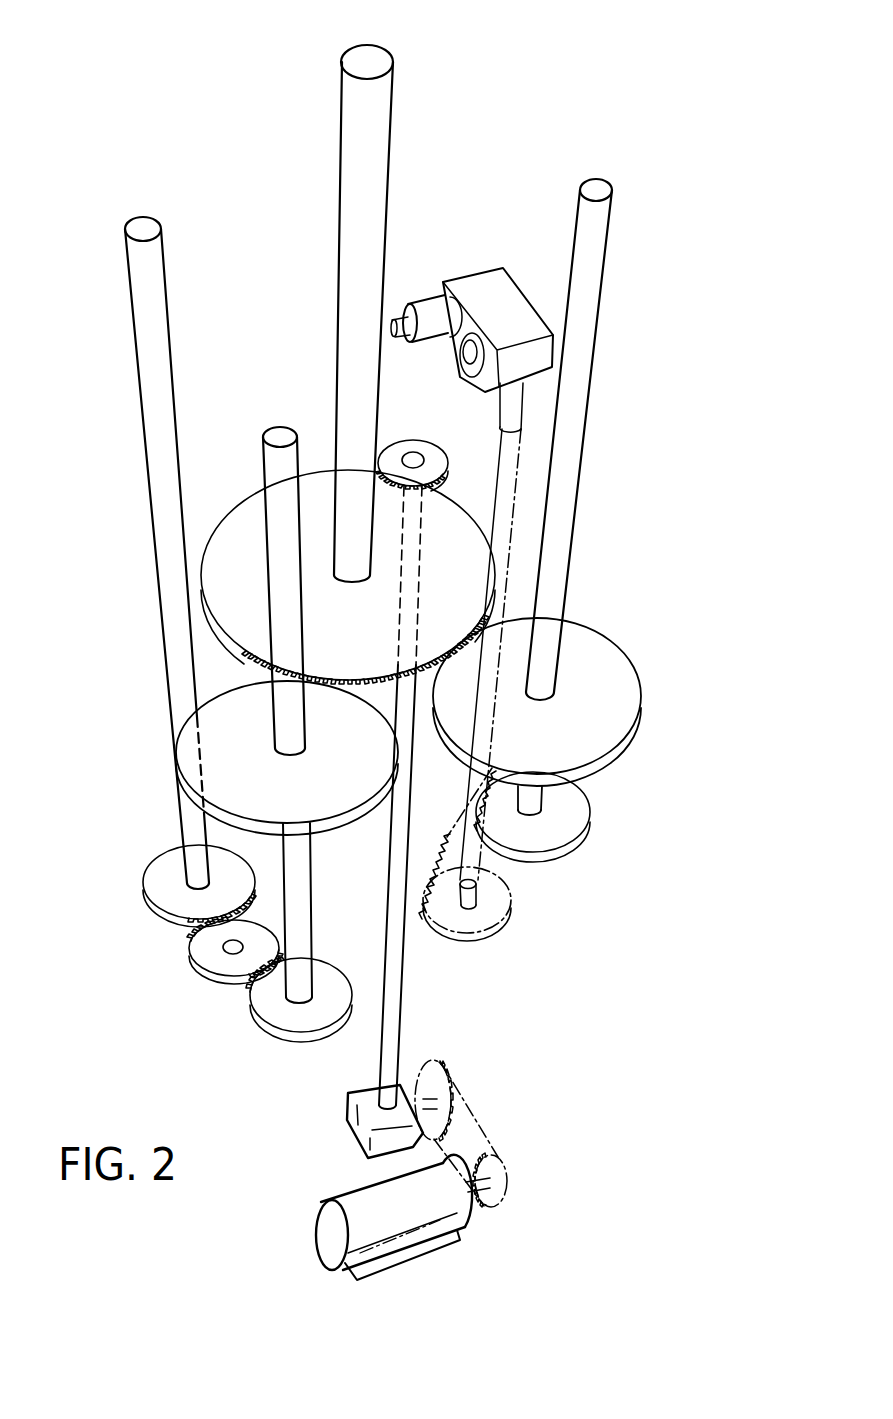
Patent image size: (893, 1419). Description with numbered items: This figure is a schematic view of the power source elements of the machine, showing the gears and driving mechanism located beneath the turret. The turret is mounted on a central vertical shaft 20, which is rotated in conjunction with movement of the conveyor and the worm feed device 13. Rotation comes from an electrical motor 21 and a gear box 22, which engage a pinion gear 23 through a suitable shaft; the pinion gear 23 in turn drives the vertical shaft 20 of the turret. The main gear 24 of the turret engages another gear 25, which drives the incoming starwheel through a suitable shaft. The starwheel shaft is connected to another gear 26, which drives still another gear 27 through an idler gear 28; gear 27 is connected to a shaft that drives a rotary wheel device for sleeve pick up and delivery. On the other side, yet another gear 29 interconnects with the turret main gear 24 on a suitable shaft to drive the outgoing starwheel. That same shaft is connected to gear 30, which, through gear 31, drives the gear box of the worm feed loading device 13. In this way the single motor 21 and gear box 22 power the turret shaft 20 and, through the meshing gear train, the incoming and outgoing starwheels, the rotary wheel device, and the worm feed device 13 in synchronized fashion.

The worm feed device 13 is at (460, 267).
The central vertical shaft 20 is at (340, 176).
The electrical motor 21 is at (333, 1232).
The gear box 22 is at (355, 1123).
The pinion gear 23 is at (413, 445).
The main gear 24 is at (240, 513).
The gear 25 is at (338, 802).
The gear 26 is at (268, 1030).
The gear 27 is at (145, 905).
The idler gear 28 is at (215, 980).
The gear 29 is at (592, 640).
The gear 30 is at (562, 835).
The gear 31 is at (462, 920).